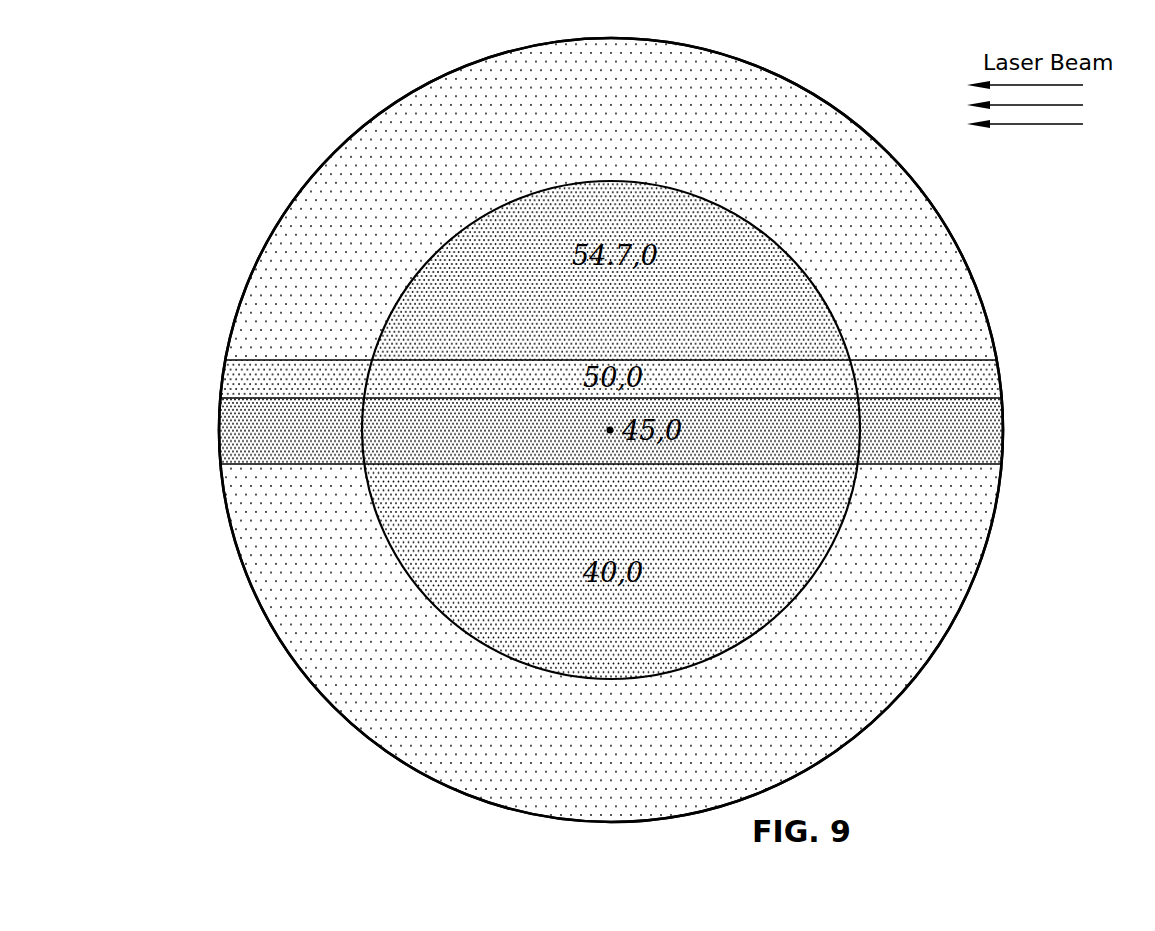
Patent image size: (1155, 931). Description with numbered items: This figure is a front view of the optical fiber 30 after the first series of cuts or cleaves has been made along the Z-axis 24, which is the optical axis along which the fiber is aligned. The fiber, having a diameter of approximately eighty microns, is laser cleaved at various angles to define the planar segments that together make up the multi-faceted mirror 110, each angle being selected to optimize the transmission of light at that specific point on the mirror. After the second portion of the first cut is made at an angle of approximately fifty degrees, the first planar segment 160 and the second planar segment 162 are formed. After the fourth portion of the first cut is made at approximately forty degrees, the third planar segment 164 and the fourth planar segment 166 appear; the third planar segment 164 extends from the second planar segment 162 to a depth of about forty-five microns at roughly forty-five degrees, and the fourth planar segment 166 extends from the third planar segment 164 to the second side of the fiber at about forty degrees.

The Z-axis 24 is at (610, 430).
The optical fiber 30 is at (832, 80).
The multi-faceted mirror 110 is at (907, 717).
The first planar segment 160 is at (420, 157).
The second planar segment 162 is at (232, 373).
The third planar segment 164 is at (232, 432).
The fourth planar segment 166 is at (363, 627).